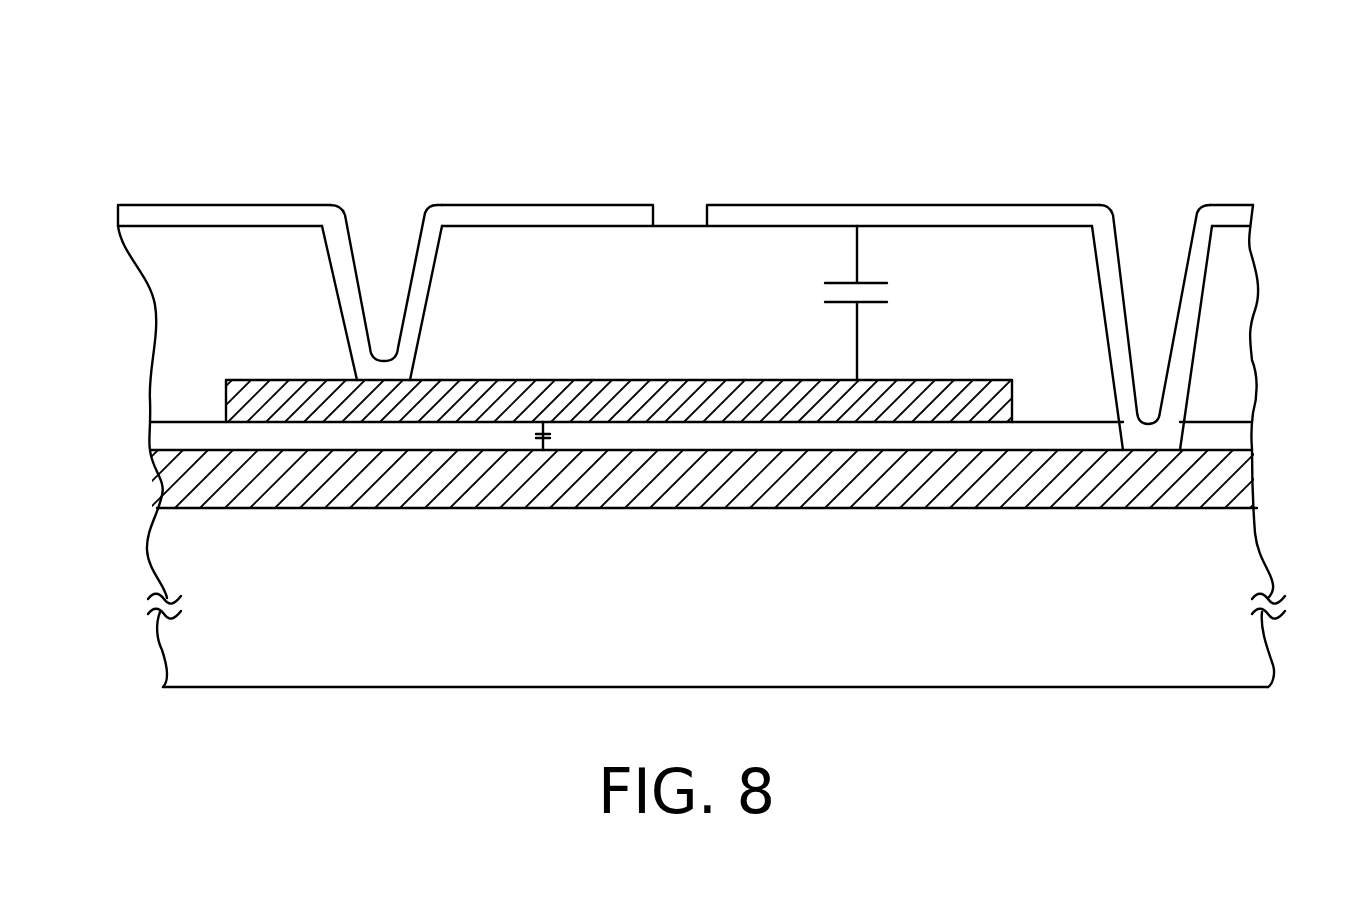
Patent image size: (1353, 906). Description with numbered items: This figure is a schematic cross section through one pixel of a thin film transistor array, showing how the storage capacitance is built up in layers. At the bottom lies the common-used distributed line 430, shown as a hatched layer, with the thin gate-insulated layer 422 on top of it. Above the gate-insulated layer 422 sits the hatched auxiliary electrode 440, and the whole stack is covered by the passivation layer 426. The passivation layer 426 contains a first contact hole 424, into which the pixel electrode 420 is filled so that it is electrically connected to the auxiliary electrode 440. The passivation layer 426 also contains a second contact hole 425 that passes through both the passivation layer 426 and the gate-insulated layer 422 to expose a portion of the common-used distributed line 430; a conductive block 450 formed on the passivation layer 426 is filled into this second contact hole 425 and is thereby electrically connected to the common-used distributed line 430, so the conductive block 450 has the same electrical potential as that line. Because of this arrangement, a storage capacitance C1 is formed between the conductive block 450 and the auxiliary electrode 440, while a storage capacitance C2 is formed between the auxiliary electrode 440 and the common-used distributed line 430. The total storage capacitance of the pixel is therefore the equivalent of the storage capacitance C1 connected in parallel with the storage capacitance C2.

The pixel electrode 420 is at (143, 218).
The gate-insulated layer 422 is at (1233, 437).
The first contact holes 424 is at (428, 297).
The second contact holes 425 is at (1108, 340).
The passivation layer 426 is at (1230, 321).
The common-used distributed line 430 is at (1235, 483).
The auxiliary electrode 440 is at (243, 400).
The conductive blocks 450 is at (1232, 218).
The storage capacitance C1 is at (878, 303).
The storage capacitance C2 is at (553, 437).